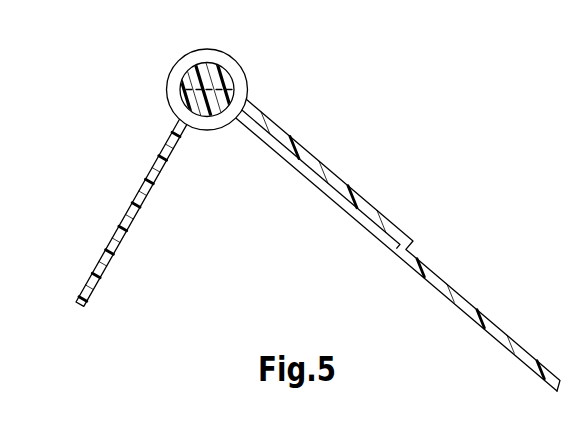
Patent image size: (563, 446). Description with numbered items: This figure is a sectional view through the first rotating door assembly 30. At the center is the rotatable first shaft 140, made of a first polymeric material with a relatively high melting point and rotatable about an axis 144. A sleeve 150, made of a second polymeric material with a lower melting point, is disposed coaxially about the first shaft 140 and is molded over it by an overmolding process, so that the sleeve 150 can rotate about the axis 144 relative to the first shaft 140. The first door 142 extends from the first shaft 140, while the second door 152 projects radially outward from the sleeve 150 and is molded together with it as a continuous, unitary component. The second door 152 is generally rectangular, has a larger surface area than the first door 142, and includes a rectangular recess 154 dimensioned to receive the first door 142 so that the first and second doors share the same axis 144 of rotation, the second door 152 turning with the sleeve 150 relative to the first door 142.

The first rotating door assembly 30 is at (278, 87).
The first shaft 140 is at (223, 70).
The first door 142 is at (137, 195).
The axis 144 is at (207, 112).
The sleeve 150 is at (174, 91).
The second door 152 is at (441, 289).
The rectangular recess 154 is at (352, 217).